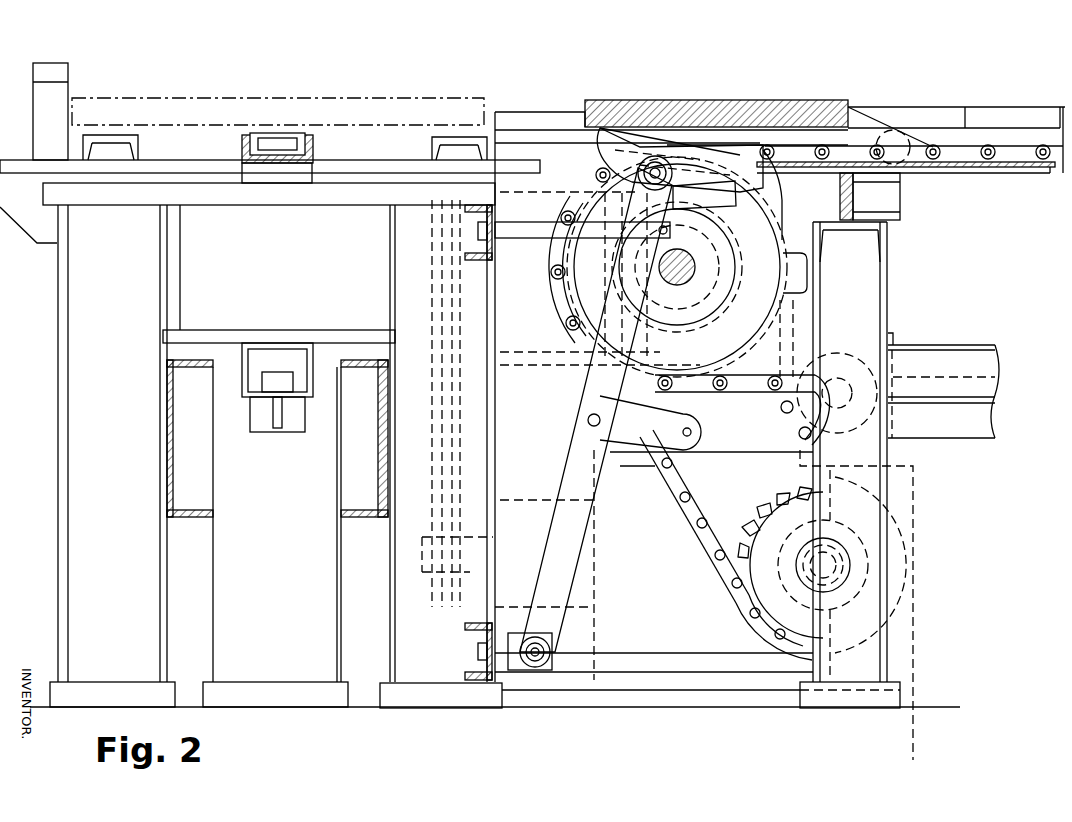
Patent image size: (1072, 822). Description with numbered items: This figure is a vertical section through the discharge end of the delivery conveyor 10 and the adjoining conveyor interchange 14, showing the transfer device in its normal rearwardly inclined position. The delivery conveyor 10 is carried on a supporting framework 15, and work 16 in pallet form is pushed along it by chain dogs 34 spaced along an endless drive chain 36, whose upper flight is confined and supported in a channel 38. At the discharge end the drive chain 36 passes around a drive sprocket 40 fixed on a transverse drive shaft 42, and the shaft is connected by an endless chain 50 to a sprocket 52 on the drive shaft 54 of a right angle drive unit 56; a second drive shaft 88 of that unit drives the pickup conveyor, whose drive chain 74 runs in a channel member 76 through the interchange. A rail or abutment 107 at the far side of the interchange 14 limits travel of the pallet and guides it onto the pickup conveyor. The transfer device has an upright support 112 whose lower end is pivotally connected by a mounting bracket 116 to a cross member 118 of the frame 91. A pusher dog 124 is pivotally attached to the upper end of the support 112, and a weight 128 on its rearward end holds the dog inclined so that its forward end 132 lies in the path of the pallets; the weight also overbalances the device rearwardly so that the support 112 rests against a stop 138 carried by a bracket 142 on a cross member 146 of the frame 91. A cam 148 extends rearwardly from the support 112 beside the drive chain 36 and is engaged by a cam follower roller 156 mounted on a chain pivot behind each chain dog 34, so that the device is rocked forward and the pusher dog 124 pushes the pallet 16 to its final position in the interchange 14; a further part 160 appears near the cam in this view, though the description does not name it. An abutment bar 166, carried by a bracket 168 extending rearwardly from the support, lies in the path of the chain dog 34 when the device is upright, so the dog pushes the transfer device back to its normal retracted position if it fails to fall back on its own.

The delivery conveyor 10 is at (968, 92).
The conveyor interchange 14 is at (176, 78).
The supporting framework 15 is at (915, 321).
The work 16 is at (595, 125).
The chain dog 34 is at (911, 140).
The endless drive chain 36 is at (965, 128).
The channel 38 is at (1017, 128).
The drive sprocket 40 is at (778, 232).
The drive shaft 42 is at (698, 265).
The endless chain 50 is at (672, 483).
The sprocket 52 is at (787, 503).
The drive shaft 54 is at (808, 566).
The right angle drive unit 56 is at (680, 559).
The drive chain 74 is at (262, 135).
The channel member 76 is at (310, 160).
The second drive shaft 88 is at (475, 546).
The frame 91 is at (52, 462).
The rail or abutment 107 is at (63, 90).
The support 112 is at (580, 448).
The mounting bracket 116 is at (505, 672).
The cross member 118 is at (470, 628).
The pusher dog 124 is at (662, 160).
The weight 128 is at (765, 197).
The forward end 132 is at (617, 133).
The stop 138 is at (700, 212).
The bracket 142 is at (510, 233).
The cross member 146 is at (470, 208).
The cam 148 is at (848, 78).
The cam follower roller 156 is at (1043, 165).
The plate 160 is at (768, 184).
The abutment bar 166 is at (700, 432).
The bracket 168 is at (676, 408).